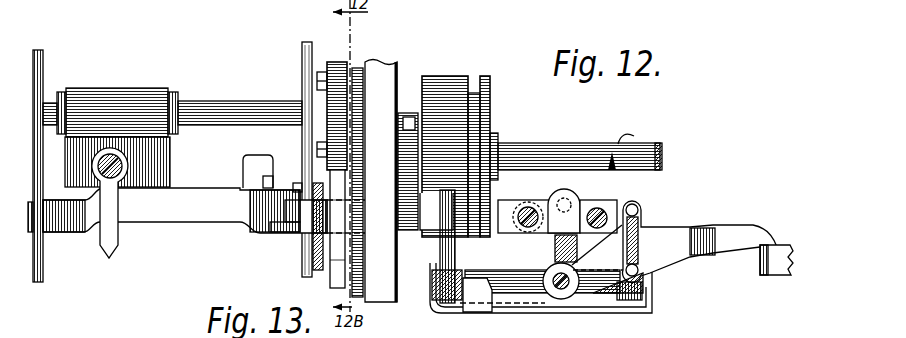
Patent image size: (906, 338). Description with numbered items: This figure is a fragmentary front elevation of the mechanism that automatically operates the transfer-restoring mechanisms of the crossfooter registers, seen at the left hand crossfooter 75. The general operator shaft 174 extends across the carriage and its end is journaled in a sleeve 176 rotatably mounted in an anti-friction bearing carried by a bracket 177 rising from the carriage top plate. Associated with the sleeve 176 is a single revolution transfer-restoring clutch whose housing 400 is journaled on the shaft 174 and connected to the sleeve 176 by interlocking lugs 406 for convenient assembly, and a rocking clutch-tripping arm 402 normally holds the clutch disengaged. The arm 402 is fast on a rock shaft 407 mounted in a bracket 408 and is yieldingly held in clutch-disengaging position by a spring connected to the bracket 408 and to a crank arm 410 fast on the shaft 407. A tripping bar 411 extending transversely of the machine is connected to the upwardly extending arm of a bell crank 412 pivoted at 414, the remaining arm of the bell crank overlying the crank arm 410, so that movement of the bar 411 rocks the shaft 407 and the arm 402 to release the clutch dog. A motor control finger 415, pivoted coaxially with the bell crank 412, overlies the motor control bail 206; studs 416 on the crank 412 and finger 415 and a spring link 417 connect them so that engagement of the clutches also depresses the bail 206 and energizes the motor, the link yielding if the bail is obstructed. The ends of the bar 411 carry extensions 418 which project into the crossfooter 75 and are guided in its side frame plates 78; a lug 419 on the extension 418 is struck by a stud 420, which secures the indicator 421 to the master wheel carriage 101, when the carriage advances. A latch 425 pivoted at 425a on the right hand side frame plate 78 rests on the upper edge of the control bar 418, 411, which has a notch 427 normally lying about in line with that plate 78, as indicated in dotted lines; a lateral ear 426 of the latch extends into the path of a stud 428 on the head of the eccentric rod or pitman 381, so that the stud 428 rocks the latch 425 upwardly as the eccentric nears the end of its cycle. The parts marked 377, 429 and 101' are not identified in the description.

The side frame plate 78 is at (40, 48).
The master wheel carriage 101 is at (110, 93).
The shaft 101' is at (240, 96).
The crossfooter 75 is at (122, 117).
The tripping bar extension 418 is at (200, 208).
The indicator 421 is at (118, 246).
The stud 420 is at (122, 163).
The lug 419 is at (277, 157).
The lateral ear 426 is at (268, 182).
The latch pivot 425a is at (296, 186).
The notch 427 is at (278, 230).
The latch 425 is at (298, 231).
The pin 429 is at (313, 252).
The stud 428 is at (322, 137).
The gear 377 is at (325, 103).
The eccentric rod 381 is at (338, 279).
The bracket 177 is at (395, 60).
The sleeve 176 is at (408, 150).
The clutch housing 400 is at (455, 77).
The interlocking lug 406 is at (413, 133).
The clutch-tripping arm 402 is at (455, 252).
The general operator shaft 174 is at (549, 146).
The bracket 408 is at (648, 316).
The rock shaft 407 is at (526, 283).
The bell crank pivot 414 is at (563, 291).
The bell crank 412 is at (556, 199).
The tripping bar 411 is at (613, 202).
The spring link 417 is at (642, 224).
The stud 416 is at (635, 205).
The motor control finger 415 is at (704, 231).
The crank arm 410 is at (644, 286).
The motor control bail 206 is at (780, 268).